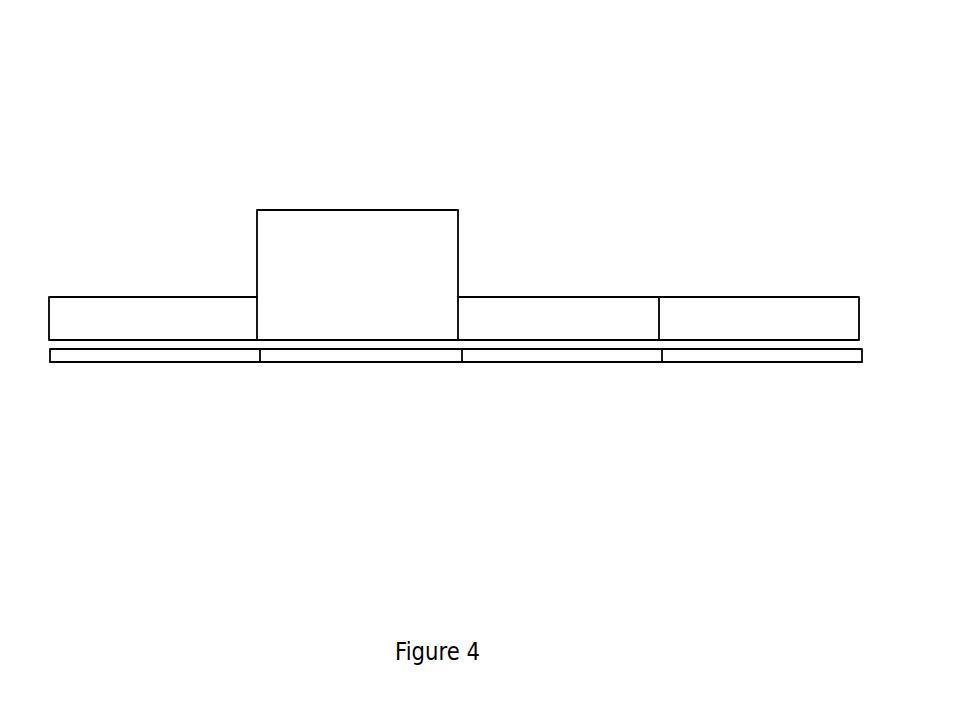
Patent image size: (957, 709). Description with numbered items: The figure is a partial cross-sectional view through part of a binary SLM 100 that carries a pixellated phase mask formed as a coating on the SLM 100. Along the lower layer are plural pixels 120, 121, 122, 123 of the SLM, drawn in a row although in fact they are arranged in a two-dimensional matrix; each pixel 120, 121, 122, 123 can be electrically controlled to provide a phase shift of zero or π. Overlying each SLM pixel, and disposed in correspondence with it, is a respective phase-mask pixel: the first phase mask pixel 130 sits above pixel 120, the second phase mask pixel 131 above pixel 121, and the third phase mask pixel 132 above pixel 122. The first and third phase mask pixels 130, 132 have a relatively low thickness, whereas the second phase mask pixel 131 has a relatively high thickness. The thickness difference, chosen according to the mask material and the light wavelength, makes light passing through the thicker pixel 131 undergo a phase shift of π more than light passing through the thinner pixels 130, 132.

The binary SLM 100 is at (455, 326).
The pixel 120 is at (191, 356).
The pixel 121 is at (391, 416).
The pixel 122 is at (596, 416).
The pixel 123 is at (763, 357).
The first phase mask pixel 130 is at (130, 306).
The second phase mask pixel 131 is at (320, 215).
The third phase mask pixel 132 is at (547, 302).